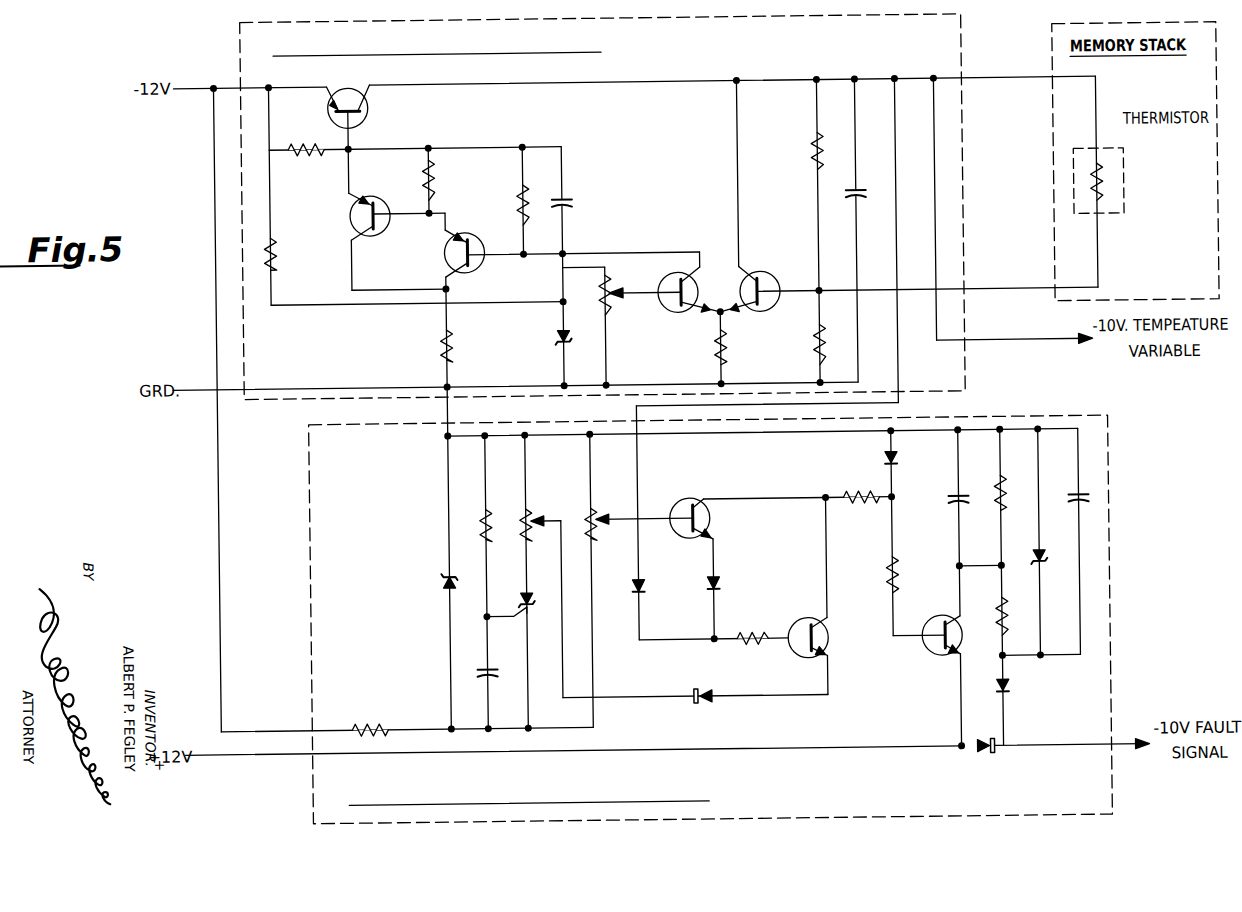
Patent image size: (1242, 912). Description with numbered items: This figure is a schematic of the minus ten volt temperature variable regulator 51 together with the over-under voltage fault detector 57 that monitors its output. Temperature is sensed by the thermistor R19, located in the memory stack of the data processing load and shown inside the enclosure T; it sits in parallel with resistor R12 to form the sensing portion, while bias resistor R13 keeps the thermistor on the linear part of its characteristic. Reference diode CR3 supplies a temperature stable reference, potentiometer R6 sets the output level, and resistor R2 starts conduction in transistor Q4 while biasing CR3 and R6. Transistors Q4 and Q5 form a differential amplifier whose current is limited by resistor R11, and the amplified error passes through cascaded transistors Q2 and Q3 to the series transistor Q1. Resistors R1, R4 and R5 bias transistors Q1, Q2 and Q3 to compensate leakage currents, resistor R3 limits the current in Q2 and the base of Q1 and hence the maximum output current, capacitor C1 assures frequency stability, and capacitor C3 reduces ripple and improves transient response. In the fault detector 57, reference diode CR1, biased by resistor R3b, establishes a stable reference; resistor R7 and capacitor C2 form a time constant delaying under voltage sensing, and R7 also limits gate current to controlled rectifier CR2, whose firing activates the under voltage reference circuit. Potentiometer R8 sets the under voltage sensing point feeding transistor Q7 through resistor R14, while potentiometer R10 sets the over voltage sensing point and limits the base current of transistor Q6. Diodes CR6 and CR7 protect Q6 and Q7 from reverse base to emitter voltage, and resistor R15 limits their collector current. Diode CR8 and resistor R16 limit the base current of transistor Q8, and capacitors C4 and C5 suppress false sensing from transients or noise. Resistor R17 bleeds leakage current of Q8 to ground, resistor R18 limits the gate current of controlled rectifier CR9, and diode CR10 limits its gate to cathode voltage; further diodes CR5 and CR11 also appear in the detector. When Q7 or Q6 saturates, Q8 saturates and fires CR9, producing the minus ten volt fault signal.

The temperature variable regulator 51 is at (968, 22).
The over-under voltage fault detector 57 is at (1110, 468).
The series transistor Q1 is at (374, 106).
The transistor Q2 is at (376, 232).
The transistor Q3 is at (480, 266).
The transistor Q4 is at (668, 307).
The transistor Q5 is at (764, 273).
The transistor Q6 is at (683, 499).
The transistor Q7 is at (828, 651).
The transistor Q8 is at (930, 655).
The bias resistor R1 is at (310, 150).
The resistor R2 is at (279, 255).
The resistor R3 is at (441, 340).
The bias resistor R3b is at (364, 720).
The bias resistor R4 is at (438, 186).
The bias resistor R5 is at (520, 204).
The potentiometer R6 is at (612, 310).
The resistor R7 is at (484, 510).
The potentiometer R8 is at (531, 507).
The potentiometer R10 is at (598, 507).
The resistor R11 is at (728, 350).
The resistor R12 is at (816, 152).
The bias resistor R13 is at (815, 346).
The resistor R14 is at (748, 645).
The resistor R15 is at (860, 505).
The resistor R16 is at (884, 578).
The resistor R17 is at (1000, 486).
The resistor R18 is at (998, 610).
The thermistor R19 is at (1108, 186).
The capacitor C1 is at (576, 200).
The capacitor C2 is at (478, 667).
The capacitor C3 is at (860, 190).
The capacitor C4 is at (948, 505).
The capacitor C5 is at (1076, 496).
The reference diode CR1 is at (440, 580).
The controlled rectifier CR2 is at (524, 590).
The reference diode CR3 is at (561, 336).
The diode CR5 is at (643, 585).
The diode CR6 is at (719, 581).
The diode CR7 is at (702, 702).
The diode CR8 is at (884, 456).
The controlled rectifier CR9 is at (990, 758).
The diode CR10 is at (1040, 572).
The diode CR11 is at (1008, 692).
The thermistor enclosure T is at (1090, 180).